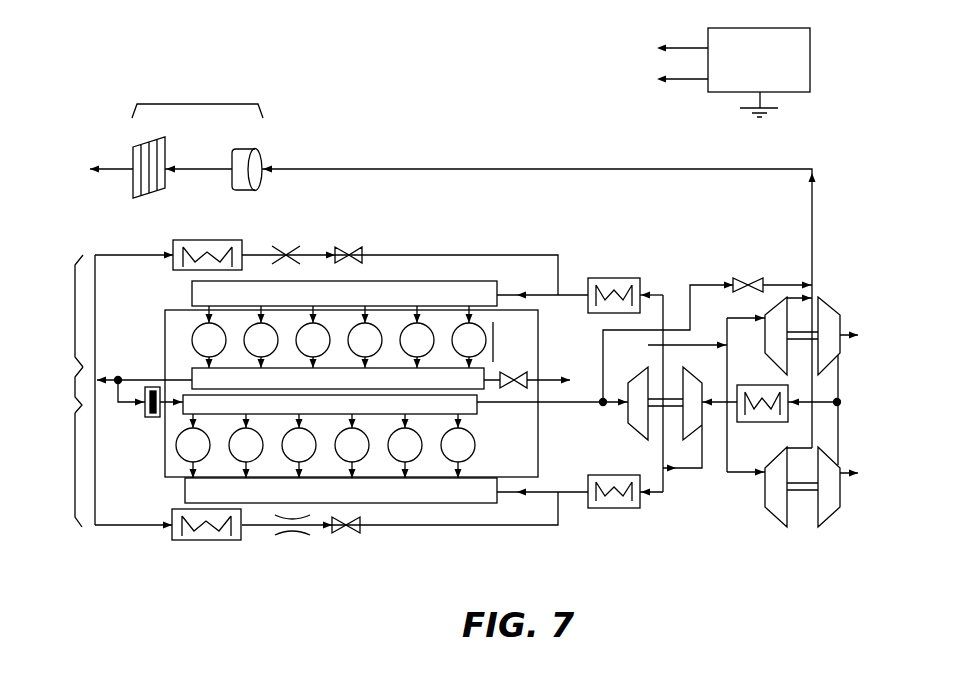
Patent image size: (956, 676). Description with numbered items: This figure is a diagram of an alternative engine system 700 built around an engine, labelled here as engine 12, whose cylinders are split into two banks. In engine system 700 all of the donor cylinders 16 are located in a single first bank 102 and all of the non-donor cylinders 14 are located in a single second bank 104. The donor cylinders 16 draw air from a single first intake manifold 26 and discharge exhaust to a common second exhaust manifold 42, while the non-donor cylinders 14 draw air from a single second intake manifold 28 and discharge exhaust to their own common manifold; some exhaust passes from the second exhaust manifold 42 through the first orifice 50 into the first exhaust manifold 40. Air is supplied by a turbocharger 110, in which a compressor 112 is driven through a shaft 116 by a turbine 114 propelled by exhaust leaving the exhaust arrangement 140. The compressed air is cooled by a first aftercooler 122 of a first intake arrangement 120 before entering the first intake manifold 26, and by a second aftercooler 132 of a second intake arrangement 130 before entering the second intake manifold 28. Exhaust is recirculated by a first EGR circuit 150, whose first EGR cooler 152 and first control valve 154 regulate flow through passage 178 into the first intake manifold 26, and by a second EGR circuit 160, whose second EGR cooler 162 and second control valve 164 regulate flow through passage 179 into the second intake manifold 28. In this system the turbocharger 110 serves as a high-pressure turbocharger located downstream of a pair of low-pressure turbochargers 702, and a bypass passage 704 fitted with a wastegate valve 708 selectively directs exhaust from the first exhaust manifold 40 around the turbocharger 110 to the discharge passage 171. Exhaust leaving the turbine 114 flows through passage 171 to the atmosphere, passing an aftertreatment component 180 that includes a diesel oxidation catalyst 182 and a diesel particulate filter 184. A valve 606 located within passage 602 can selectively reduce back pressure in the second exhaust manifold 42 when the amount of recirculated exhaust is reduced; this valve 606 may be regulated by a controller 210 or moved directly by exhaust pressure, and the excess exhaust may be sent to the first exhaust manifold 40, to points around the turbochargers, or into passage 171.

The engine system 700 is at (92, 568).
The engine 12 is at (351, 393).
The non-donor cylinders 14 is at (465, 452).
The donor cylinders 16 is at (476, 347).
The first intake manifold 26 is at (344, 293).
The second intake manifold 28 is at (341, 490).
The first exhaust manifold 40 is at (330, 404).
The second exhaust manifold 42 is at (338, 378).
The first orifice 50 is at (145, 412).
The first bank 102 is at (499, 322).
The second bank 104 is at (535, 432).
The turbocharger 110 is at (643, 407).
The compressor 112 is at (697, 433).
The turbine 114 is at (627, 427).
The shaft 116 is at (683, 395).
The first intake arrangement 120 is at (666, 247).
The first aftercooler 122 is at (612, 277).
The second intake arrangement 130 is at (660, 523).
The second aftercooler 132 is at (615, 508).
The exhaust arrangement 140 is at (73, 382).
The first EGR circuit 150 is at (75, 295).
The first EGR cooler 152 is at (190, 240).
The first control valve 154 is at (360, 262).
The second EGR circuit 160 is at (73, 443).
The second EGR cooler 162 is at (203, 540).
The second control valve 164 is at (350, 533).
The passage 171 is at (812, 222).
The passage 178 is at (95, 312).
The passage 179 is at (95, 457).
The aftertreatment component 180 is at (197, 104).
The diesel oxidation catalyst 182 is at (264, 142).
The diesel particulate filter 184 is at (162, 140).
The controller 210 is at (771, 69).
The passage 602 is at (486, 394).
The valve 606 is at (517, 372).
The low-pressure turbochargers 702 is at (854, 298).
The bypass passage 704 is at (538, 333).
The valve 708 is at (748, 278).